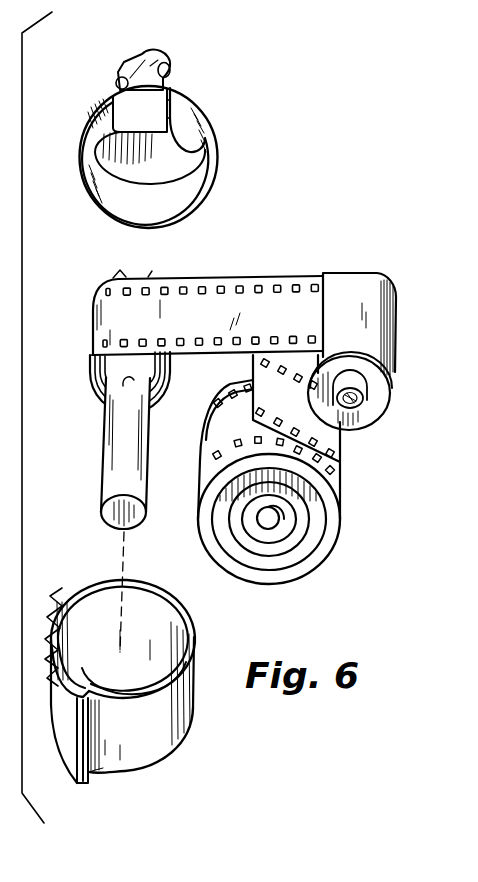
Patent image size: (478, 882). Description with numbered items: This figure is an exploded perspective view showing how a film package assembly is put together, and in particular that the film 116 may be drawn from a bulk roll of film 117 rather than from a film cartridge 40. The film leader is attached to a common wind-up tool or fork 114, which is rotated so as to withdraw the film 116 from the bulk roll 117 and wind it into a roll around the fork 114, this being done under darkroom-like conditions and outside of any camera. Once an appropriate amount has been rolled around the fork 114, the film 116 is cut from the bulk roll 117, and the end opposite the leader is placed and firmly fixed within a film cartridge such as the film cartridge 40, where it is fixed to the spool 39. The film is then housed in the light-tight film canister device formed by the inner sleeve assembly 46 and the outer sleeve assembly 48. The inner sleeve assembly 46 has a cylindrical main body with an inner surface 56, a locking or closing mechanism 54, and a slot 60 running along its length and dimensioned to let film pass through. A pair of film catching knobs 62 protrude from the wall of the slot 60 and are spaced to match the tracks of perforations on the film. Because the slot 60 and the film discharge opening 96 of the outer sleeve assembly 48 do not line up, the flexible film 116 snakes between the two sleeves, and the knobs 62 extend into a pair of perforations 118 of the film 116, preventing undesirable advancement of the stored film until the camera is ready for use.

The spool 39 is at (368, 404).
The film cartridge 40 is at (364, 282).
The inner sleeve assembly 46 is at (232, 134).
The outer sleeve assembly 48 is at (141, 776).
The locking or closing mechanism 54 is at (126, 66).
The inner surface 56 is at (114, 197).
The slot 60 is at (181, 107).
The film catching knobs 62 is at (170, 99).
The film discharge opening 96 is at (86, 791).
The wind-up tool or fork 114 is at (118, 456).
The film 116 is at (209, 330).
The bulk roll of film 117 is at (331, 552).
The perforations 118 is at (270, 342).